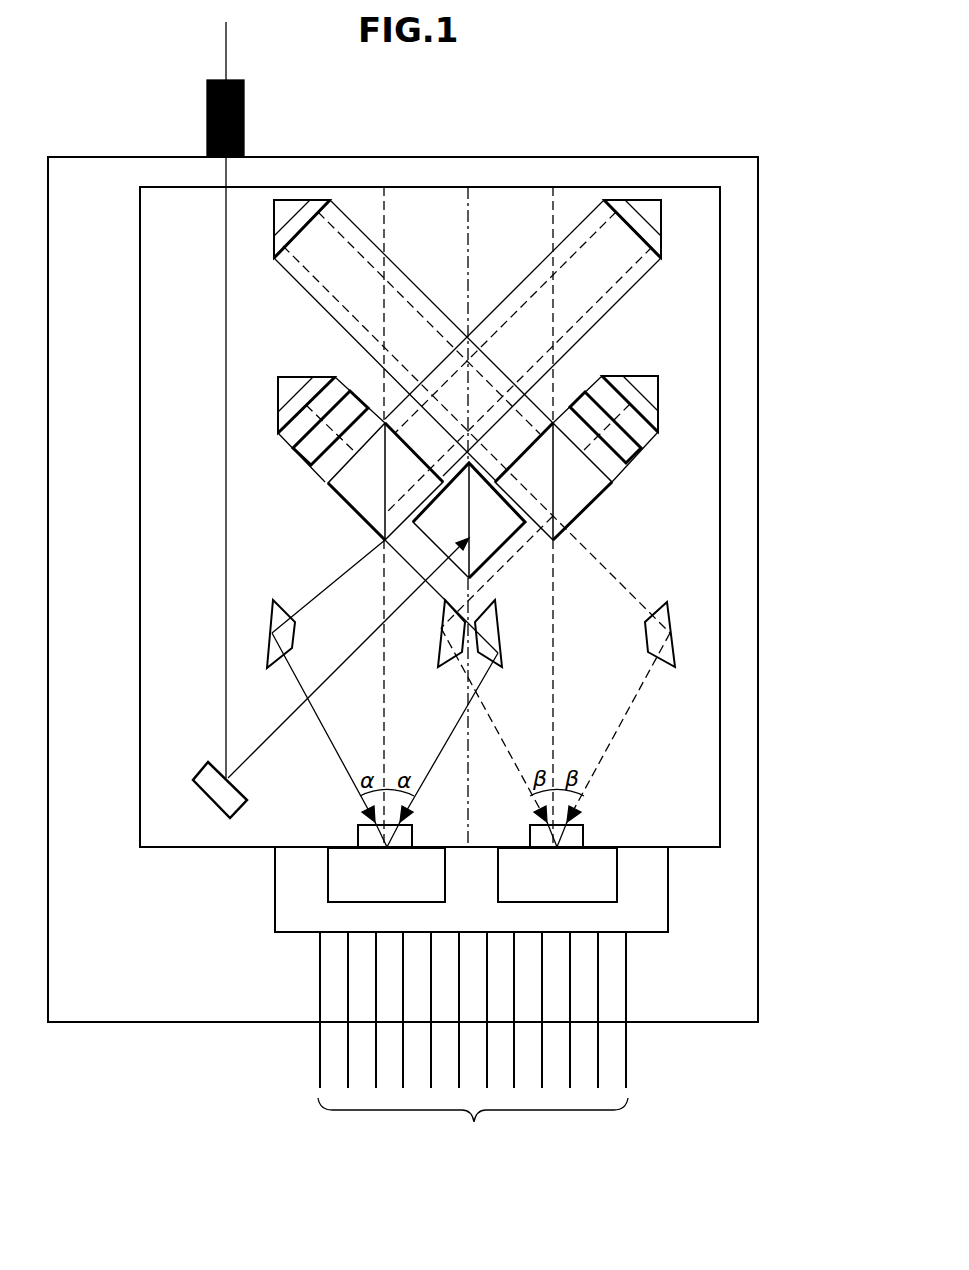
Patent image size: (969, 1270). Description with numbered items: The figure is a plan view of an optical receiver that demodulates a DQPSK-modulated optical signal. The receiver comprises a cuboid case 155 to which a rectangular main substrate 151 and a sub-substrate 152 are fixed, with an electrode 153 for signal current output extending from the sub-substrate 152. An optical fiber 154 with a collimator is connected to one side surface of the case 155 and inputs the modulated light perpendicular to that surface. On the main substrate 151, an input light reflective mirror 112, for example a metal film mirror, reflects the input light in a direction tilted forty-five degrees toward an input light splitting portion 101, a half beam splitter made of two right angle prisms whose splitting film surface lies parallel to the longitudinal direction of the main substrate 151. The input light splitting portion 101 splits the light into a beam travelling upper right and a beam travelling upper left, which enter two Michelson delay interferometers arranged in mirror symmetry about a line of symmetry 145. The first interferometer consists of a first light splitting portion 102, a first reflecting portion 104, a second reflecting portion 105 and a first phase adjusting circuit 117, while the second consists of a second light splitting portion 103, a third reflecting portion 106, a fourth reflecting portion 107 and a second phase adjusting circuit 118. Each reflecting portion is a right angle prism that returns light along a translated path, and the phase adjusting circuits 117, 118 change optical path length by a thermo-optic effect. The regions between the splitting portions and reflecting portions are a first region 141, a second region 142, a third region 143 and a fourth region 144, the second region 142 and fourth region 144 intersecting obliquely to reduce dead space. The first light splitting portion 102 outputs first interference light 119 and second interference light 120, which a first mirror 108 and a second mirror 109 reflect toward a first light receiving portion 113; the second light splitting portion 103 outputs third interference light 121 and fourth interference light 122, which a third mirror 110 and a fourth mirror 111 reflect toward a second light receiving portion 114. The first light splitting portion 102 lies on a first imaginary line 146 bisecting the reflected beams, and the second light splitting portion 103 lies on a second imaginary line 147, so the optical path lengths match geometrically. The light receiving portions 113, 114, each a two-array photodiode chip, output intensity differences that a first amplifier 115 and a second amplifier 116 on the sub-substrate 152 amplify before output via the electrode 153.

The input light splitting portion 101 is at (502, 552).
The first light splitting portion 102 is at (336, 495).
The second light splitting portion 103 is at (596, 494).
The first reflecting portion 104 is at (290, 377).
The second reflecting portion 105 is at (661, 215).
The third reflecting portion 106 is at (642, 377).
The fourth reflecting portion 107 is at (274, 208).
The first mirror 108 is at (277, 601).
The second mirror 109 is at (500, 653).
The third mirror 110 is at (440, 652).
The fourth mirror 111 is at (660, 601).
The input light reflective mirror 112 is at (210, 800).
The first light receiving portion 113 is at (358, 833).
The second light receiving portion 114 is at (583, 833).
The first amplifier 115 is at (410, 889).
The second amplifier 116 is at (579, 889).
The first phase adjusting circuit 117 is at (304, 454).
The second phase adjusting circuit 118 is at (640, 458).
The first interference light 119 is at (334, 743).
The second interference light 120 is at (428, 763).
The third interference light 121 is at (502, 749).
The fourth interference light 122 is at (593, 762).
The first region 141 is at (291, 449).
The second region 142 is at (644, 289).
The third region 143 is at (654, 448).
The fourth region 144 is at (292, 289).
The line of symmetry 145 is at (468, 250).
The first imaginary line 146 is at (384, 213).
The second imaginary line 147 is at (553, 217).
The main substrate 151 is at (140, 652).
The sub-substrate 152 is at (275, 889).
The electrode for signal current output 153 is at (473, 1042).
The optical fiber with collimator 154 is at (244, 97).
The case 155 is at (133, 1022).